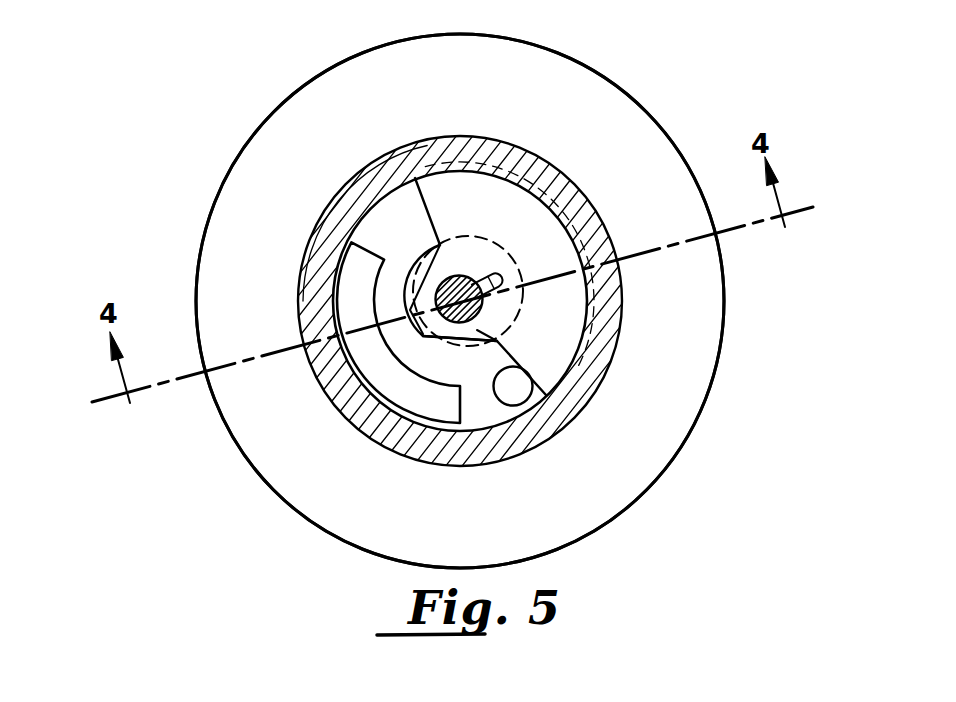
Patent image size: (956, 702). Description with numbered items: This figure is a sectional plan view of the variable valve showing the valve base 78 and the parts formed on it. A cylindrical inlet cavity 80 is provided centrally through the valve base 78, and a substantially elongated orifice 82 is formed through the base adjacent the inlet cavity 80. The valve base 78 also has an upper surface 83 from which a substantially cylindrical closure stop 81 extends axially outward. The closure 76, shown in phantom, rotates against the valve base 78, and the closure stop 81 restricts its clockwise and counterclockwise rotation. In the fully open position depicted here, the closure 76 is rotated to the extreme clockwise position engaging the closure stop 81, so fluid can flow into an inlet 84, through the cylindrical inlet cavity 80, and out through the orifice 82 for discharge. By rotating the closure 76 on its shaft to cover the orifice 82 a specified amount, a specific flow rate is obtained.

The closure 76 is at (580, 360).
The valve base 78 is at (723, 308).
The cylindrical inlet cavity 80 is at (422, 267).
The closure stop 81 is at (521, 403).
The elongated orifice 82 is at (388, 378).
The upper surface 83 is at (622, 150).
The inlet 84 is at (487, 348).